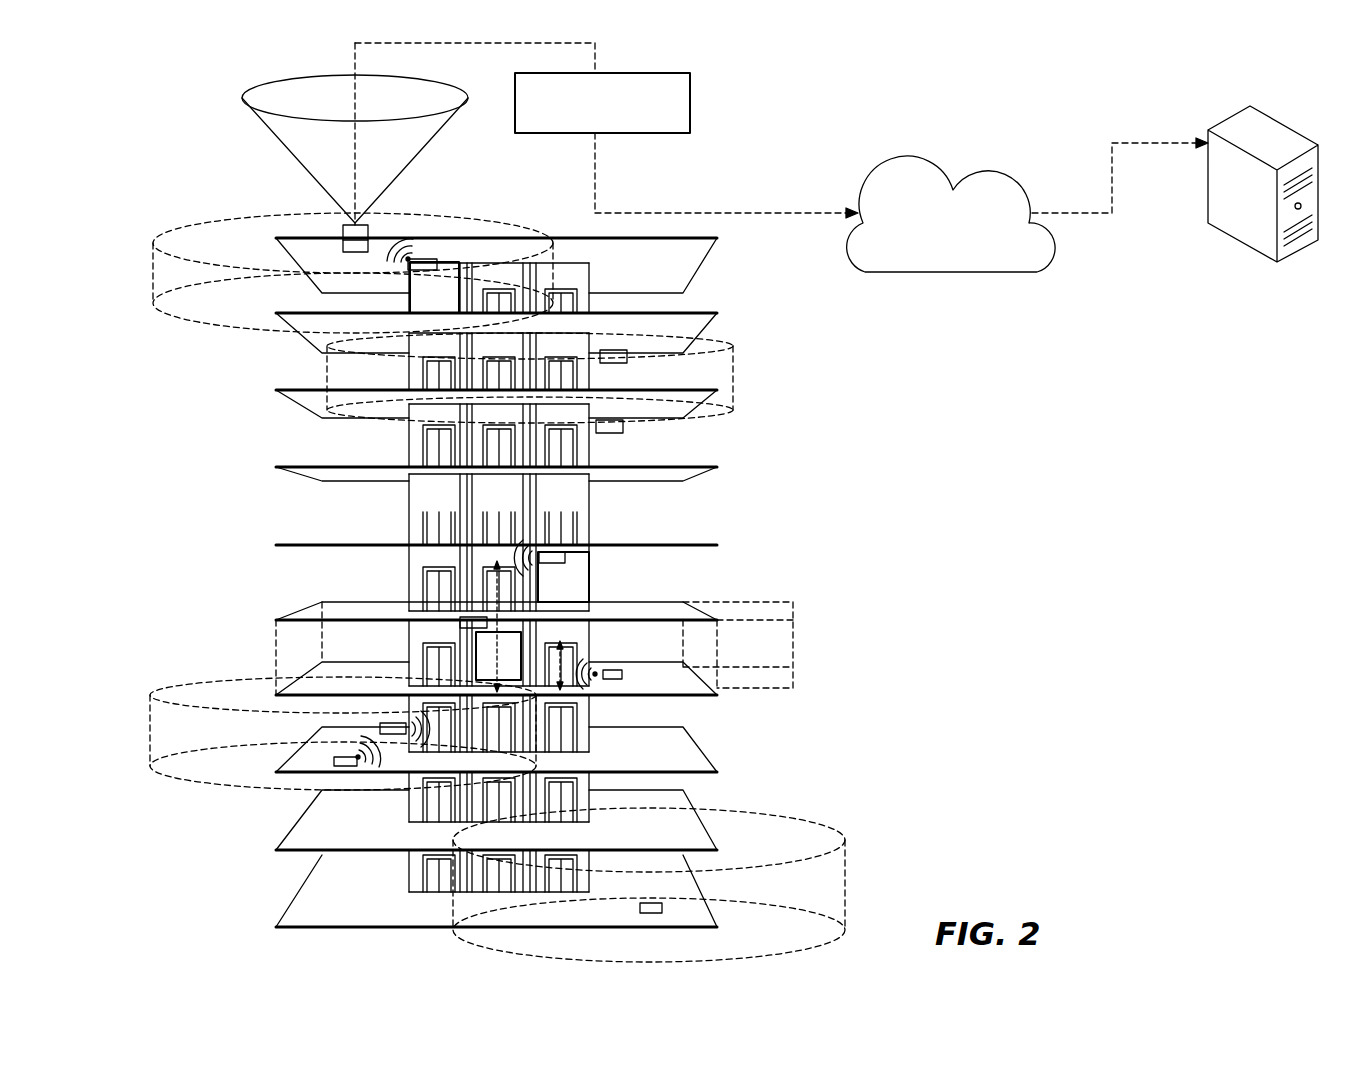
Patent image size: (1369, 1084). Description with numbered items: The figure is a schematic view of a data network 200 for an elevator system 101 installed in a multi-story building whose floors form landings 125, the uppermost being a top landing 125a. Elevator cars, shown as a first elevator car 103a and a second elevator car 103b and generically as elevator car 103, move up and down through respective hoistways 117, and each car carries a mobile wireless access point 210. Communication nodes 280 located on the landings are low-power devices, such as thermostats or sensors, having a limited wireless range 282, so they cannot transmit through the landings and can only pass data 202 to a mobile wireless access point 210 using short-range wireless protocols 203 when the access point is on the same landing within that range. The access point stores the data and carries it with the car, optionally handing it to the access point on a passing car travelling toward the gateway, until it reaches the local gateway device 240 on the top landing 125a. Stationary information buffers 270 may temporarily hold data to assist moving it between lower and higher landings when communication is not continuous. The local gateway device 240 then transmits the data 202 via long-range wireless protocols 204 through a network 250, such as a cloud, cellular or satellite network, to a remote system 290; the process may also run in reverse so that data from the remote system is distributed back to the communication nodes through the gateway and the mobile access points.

The data network 200 is at (128, 145).
The elevator system 101 is at (232, 890).
The elevator car 103 is at (421, 303).
The first elevator car 103a is at (546, 594).
The second elevator car 103b is at (482, 668).
The hoistway 117 is at (574, 507).
The landing 125 is at (688, 545).
The top landing 125a is at (705, 313).
The data 202 is at (686, 103).
The short-range wireless protocols 203 is at (600, 680).
The long-range wireless protocols 204 is at (597, 150).
The mobile wireless access point 210 is at (421, 260).
The local gateway device 240 is at (343, 230).
The network 250 is at (915, 180).
The stationary information buffer 270 is at (393, 723).
The communication node 280 is at (623, 430).
The wireless range 282 is at (795, 641).
The remote system 290 is at (1297, 262).